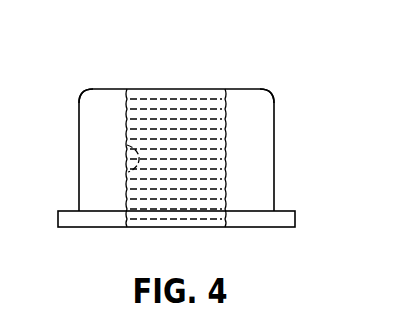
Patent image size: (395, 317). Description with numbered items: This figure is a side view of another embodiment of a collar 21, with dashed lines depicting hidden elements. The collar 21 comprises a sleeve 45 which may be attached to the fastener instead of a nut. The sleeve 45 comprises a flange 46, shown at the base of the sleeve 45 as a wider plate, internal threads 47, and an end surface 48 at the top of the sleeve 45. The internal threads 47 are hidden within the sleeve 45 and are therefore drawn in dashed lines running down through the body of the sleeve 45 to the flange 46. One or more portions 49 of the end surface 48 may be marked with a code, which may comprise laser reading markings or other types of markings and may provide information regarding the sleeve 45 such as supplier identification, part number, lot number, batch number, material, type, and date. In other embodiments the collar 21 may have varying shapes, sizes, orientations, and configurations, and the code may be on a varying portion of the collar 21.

The collar 21 is at (292, 107).
The sleeve 45 is at (275, 145).
The flange 46 is at (286, 211).
The internal threads 47 is at (127, 145).
The end surface 48 is at (175, 89).
The portions of the end surface 49 is at (108, 89).